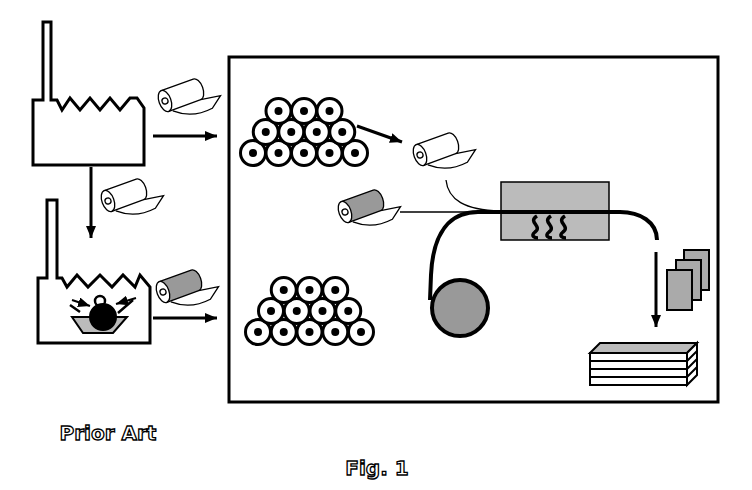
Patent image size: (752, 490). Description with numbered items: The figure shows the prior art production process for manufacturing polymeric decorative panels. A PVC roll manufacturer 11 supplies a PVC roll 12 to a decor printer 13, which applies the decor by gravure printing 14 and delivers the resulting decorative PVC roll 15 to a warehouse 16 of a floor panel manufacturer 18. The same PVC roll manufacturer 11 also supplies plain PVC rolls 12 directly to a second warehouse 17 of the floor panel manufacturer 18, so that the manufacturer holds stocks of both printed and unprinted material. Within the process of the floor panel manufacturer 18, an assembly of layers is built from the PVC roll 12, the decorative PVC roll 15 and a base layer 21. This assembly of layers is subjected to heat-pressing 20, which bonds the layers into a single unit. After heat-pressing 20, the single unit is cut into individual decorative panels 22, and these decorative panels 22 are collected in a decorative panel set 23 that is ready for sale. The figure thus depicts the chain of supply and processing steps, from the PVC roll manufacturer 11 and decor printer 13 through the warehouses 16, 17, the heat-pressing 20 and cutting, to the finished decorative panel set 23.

The PVC roll manufacturer 11 is at (88, 93).
The PVC roll 12 is at (278, 155).
The decor printer 13 is at (94, 271).
The gravure printing 14 is at (98, 330).
The decorative PVC roll 15 is at (326, 268).
The warehouse 16 is at (352, 235).
The warehouse 17 is at (322, 116).
The floor panel manufacturer 18 is at (400, 57).
The heat-pressing 20 is at (578, 195).
The base layer 21 is at (462, 292).
The decorative panels 22 is at (662, 288).
The decorative panel set 23 is at (622, 364).